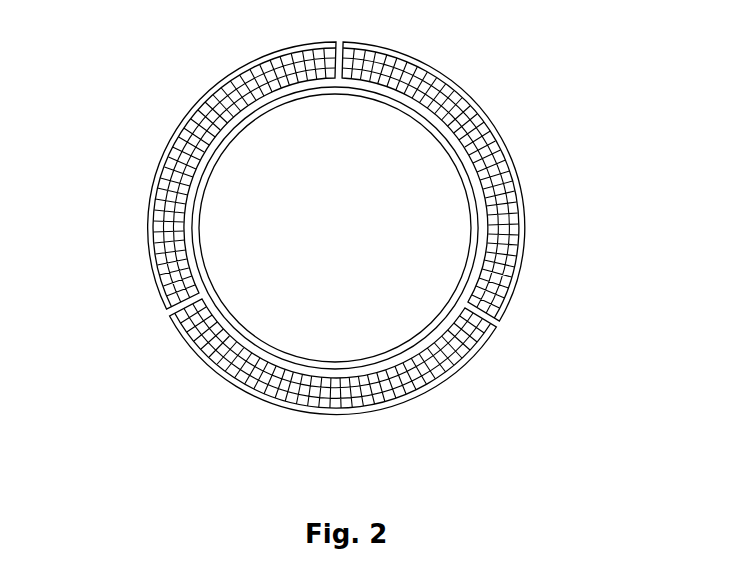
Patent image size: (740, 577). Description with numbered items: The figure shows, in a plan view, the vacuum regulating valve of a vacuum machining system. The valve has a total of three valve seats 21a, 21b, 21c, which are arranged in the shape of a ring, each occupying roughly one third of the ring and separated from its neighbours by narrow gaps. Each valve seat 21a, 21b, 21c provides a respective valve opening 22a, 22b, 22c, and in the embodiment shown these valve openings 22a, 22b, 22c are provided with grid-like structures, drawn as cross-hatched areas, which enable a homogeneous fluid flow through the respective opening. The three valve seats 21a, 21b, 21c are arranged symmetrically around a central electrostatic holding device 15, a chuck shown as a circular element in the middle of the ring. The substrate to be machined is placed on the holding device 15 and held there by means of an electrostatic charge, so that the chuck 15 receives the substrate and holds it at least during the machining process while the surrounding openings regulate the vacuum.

The electrostatic holding device 15 is at (350, 248).
The valve seat 21a is at (502, 150).
The valve seat 21b is at (187, 112).
The valve seat 21c is at (235, 384).
The valve opening 22a is at (523, 202).
The valve opening 22b is at (165, 168).
The valve opening 22c is at (332, 371).